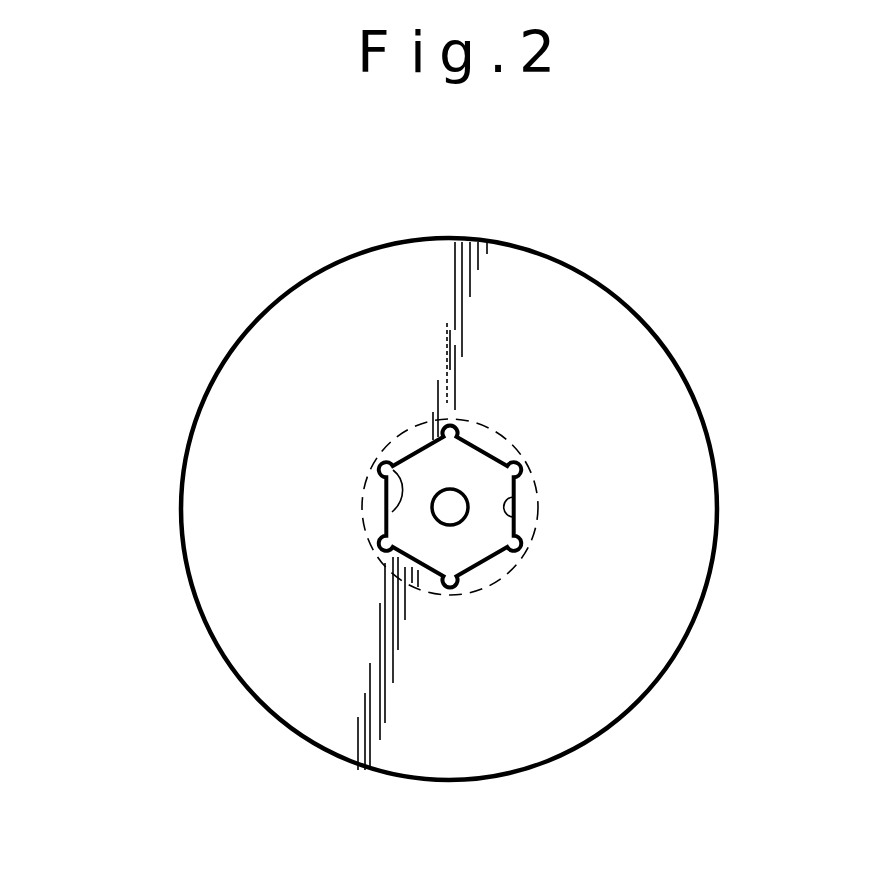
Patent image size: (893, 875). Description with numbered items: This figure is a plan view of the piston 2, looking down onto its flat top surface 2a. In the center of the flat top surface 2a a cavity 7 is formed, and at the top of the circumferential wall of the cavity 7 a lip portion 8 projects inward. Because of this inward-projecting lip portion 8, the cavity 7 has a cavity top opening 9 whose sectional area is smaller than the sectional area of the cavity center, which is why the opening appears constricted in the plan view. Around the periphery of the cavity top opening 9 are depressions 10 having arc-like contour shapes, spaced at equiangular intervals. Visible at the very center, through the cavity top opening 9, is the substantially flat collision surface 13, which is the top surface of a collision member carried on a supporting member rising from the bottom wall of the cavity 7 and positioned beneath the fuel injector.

The piston 2 is at (684, 662).
The flat top surface 2a is at (620, 347).
The cavity 7 is at (496, 436).
The lip portion 8 is at (415, 434).
The cavity top opening 9 is at (517, 517).
The depressions 10 is at (387, 515).
The collision surface 13 is at (459, 518).